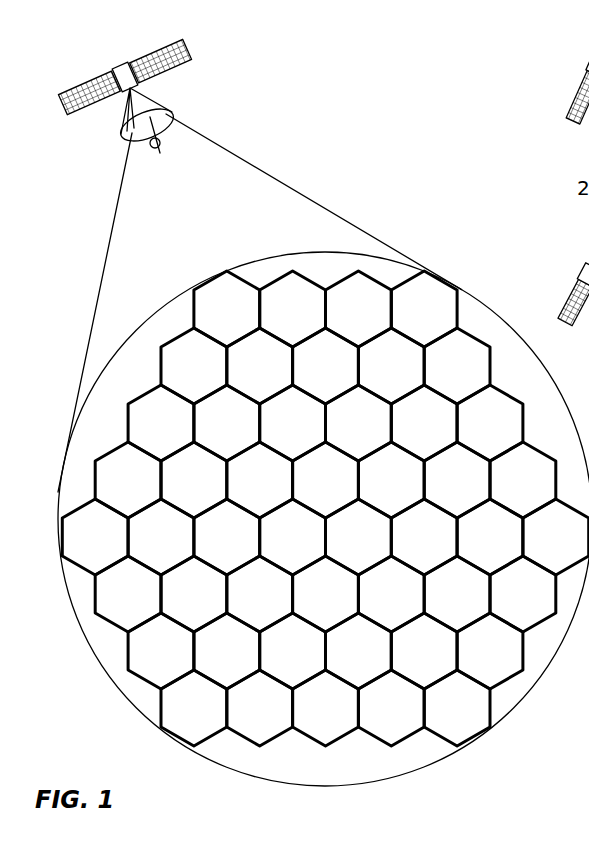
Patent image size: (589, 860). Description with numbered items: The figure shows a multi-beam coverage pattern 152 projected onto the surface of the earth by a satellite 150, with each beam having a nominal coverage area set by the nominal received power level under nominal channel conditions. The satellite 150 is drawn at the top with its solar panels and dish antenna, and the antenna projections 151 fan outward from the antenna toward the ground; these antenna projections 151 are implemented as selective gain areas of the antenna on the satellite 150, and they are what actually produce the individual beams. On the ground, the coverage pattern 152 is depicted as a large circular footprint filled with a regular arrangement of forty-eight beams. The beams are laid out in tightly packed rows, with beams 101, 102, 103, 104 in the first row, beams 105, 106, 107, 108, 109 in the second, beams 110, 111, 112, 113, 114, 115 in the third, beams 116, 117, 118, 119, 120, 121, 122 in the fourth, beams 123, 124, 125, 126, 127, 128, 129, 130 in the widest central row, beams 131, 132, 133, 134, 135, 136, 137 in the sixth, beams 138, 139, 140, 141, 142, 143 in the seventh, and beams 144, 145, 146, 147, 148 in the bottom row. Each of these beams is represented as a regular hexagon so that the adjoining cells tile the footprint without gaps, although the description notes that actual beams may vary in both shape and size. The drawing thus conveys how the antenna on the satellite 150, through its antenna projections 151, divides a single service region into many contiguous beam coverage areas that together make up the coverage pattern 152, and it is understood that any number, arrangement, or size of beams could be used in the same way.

The beam 101 is at (245, 323).
The beam 102 is at (311, 323).
The beam 103 is at (376, 323).
The beam 104 is at (442, 323).
The beam 105 is at (212, 380).
The beam 106 is at (278, 380).
The beam 107 is at (344, 380).
The beam 108 is at (409, 380).
The beam 109 is at (475, 380).
The beam 110 is at (179, 437).
The beam 111 is at (245, 437).
The beam 112 is at (311, 437).
The beam 113 is at (376, 437).
The beam 114 is at (442, 437).
The beam 115 is at (508, 437).
The beam 116 is at (146, 494).
The beam 117 is at (212, 494).
The beam 118 is at (278, 494).
The beam 119 is at (344, 494).
The beam 120 is at (409, 494).
The beam 121 is at (475, 494).
The beam 122 is at (541, 494).
The beam 123 is at (113, 551).
The beam 124 is at (179, 551).
The beam 125 is at (245, 551).
The beam 126 is at (311, 551).
The beam 127 is at (376, 551).
The beam 128 is at (442, 551).
The beam 129 is at (508, 551).
The beam 130 is at (574, 551).
The beam 131 is at (146, 608).
The beam 132 is at (212, 608).
The beam 133 is at (278, 608).
The beam 134 is at (344, 608).
The beam 135 is at (409, 608).
The beam 136 is at (475, 608).
The beam 137 is at (541, 608).
The beam 138 is at (179, 665).
The beam 139 is at (245, 665).
The beam 140 is at (311, 665).
The beam 141 is at (376, 665).
The beam 142 is at (442, 665).
The beam 143 is at (508, 665).
The beam 144 is at (212, 722).
The beam 145 is at (278, 722).
The beam 146 is at (344, 722).
The beam 147 is at (409, 722).
The beam 148 is at (475, 722).
The satellite 150 is at (118, 64).
The antenna projections 151 is at (222, 147).
The coverage pattern 152 is at (285, 252).